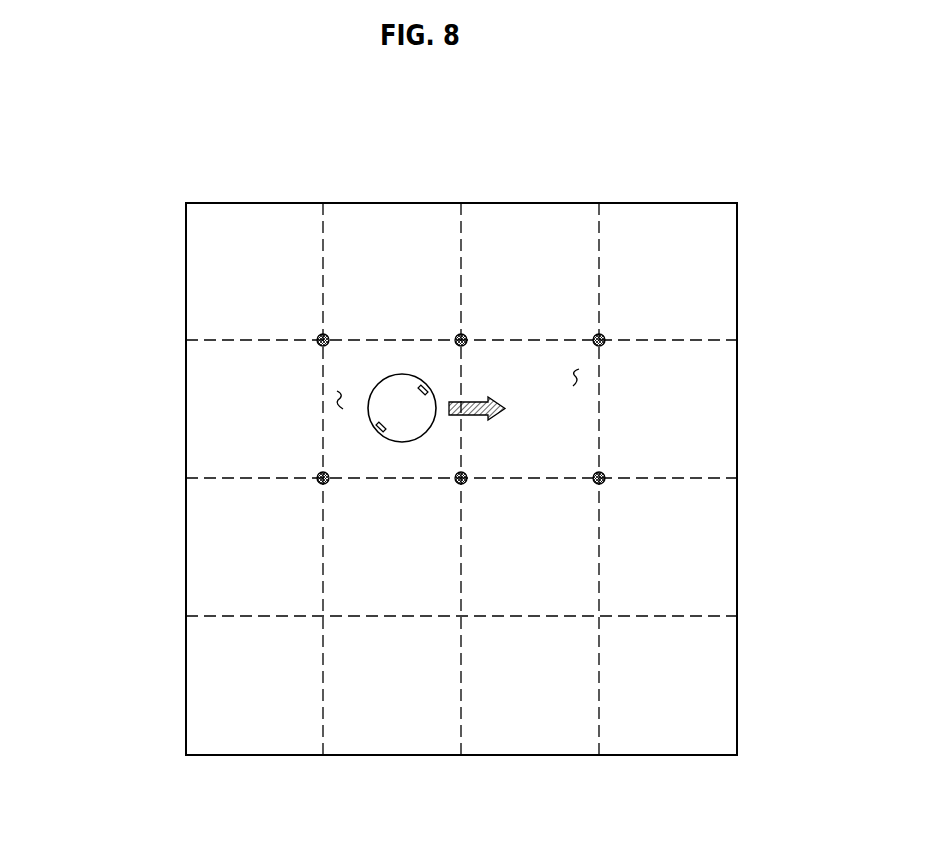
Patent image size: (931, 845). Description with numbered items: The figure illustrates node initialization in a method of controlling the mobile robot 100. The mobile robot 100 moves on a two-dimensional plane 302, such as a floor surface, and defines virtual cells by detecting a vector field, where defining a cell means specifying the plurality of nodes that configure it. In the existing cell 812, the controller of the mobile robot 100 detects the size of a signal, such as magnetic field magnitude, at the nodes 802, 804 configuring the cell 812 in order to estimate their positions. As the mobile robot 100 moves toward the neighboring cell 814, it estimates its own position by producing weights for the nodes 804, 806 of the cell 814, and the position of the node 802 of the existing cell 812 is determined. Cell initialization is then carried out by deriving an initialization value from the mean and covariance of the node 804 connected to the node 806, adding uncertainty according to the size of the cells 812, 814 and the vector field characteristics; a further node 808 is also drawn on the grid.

The mobile robot 100 is at (400, 382).
The two-dimensional plane 302 is at (172, 665).
The node 802 is at (323, 334).
The node 804 is at (461, 334).
The node 806 is at (599, 334).
The node 808 is at (596, 484).
The cell 812 is at (338, 402).
The neighboring cell 814 is at (578, 372).